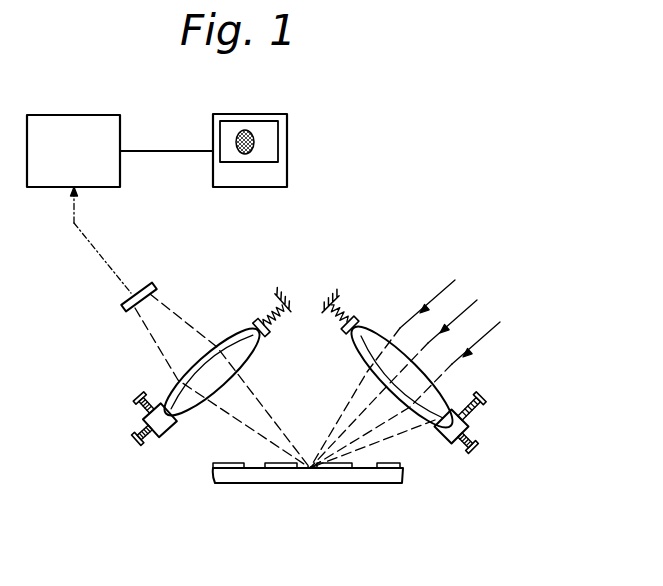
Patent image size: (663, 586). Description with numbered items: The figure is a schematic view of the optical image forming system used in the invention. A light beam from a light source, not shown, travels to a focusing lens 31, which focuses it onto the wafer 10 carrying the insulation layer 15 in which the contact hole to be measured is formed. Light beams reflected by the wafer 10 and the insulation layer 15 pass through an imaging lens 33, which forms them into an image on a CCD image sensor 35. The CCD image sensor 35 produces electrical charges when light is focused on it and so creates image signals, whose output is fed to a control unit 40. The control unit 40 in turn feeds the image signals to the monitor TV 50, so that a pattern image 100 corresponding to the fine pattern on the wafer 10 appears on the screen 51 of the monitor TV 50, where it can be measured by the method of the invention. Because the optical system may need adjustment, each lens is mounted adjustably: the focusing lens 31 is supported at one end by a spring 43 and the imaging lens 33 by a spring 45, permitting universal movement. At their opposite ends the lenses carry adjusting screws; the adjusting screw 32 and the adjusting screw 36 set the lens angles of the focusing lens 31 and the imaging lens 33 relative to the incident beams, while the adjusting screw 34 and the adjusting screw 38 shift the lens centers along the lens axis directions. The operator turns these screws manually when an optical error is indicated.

The control unit 40 is at (77, 114).
The pattern image 100 is at (245, 130).
The screen 51 is at (272, 142).
The monitor TV 50 is at (280, 182).
The CCD image sensor 35 is at (151, 286).
The imaging lens 33 is at (231, 329).
The spring 45 is at (269, 322).
The spring 43 is at (346, 316).
The focusing lens 31 is at (377, 331).
The adjusting screw 32 is at (487, 392).
The adjusting screw 34 is at (471, 438).
The adjusting screw 36 is at (127, 400).
The adjusting screw 38 is at (150, 452).
The insulation layer 15 is at (401, 466).
The wafer 10 is at (402, 481).